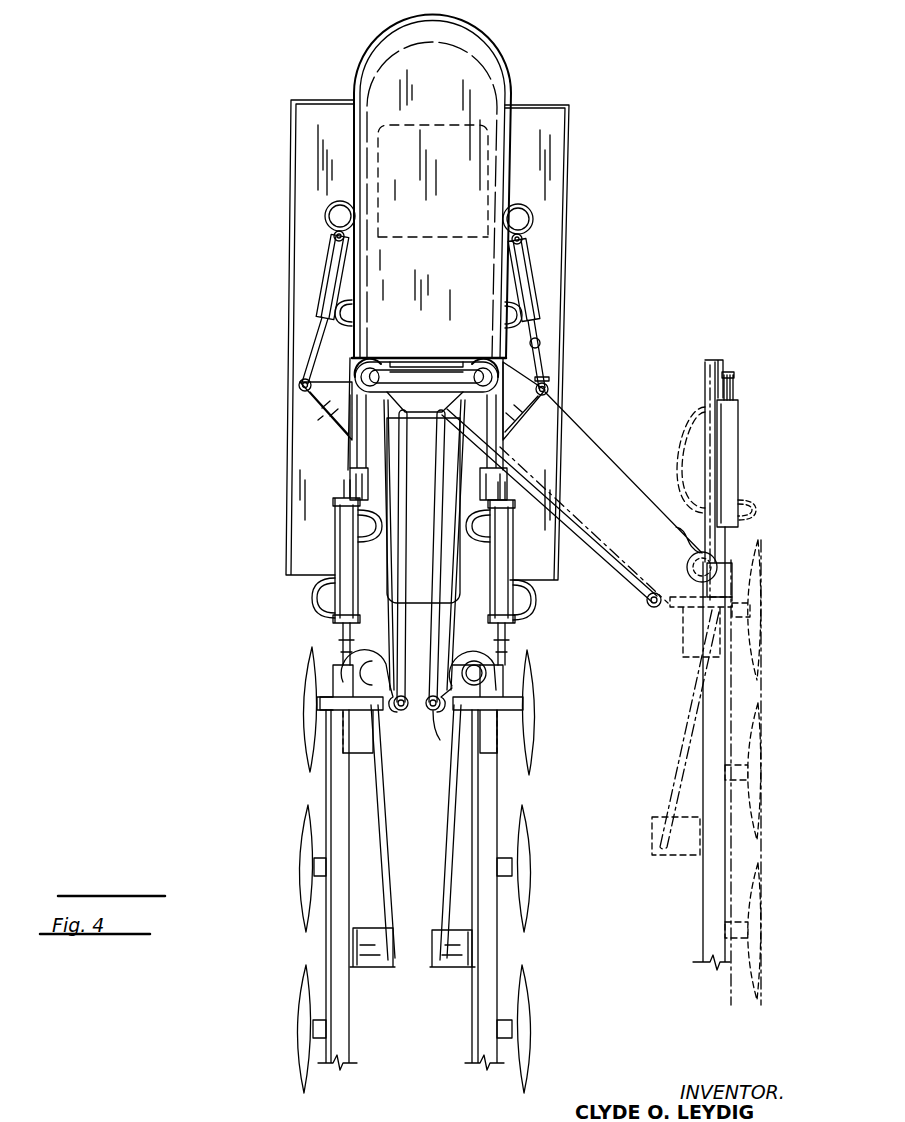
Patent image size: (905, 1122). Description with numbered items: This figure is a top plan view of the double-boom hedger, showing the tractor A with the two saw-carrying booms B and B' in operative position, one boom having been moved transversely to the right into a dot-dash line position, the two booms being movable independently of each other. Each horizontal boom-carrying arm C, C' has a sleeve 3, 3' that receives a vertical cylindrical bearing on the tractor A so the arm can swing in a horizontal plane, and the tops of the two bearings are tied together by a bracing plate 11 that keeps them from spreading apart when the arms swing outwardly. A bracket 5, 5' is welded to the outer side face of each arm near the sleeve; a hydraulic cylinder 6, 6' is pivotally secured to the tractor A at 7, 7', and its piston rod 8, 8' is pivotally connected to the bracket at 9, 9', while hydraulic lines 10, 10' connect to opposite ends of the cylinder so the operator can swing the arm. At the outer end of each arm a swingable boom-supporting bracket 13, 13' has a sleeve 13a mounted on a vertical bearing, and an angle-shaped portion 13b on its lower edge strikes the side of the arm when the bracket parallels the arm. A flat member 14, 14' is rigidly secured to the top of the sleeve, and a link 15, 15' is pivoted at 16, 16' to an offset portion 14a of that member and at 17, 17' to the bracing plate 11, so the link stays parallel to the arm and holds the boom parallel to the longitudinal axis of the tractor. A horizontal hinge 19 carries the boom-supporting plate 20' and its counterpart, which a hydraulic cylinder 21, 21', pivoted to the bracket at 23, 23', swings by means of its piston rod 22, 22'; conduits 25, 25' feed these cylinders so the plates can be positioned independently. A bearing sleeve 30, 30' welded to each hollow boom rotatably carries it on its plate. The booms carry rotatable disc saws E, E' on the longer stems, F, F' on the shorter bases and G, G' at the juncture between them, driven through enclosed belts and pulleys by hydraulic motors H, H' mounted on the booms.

The tractor A is at (572, 190).
The boom B is at (591, 821).
The boom B' is at (338, 913).
The boom-carrying arm C is at (584, 516).
The boom-carrying arm C' is at (324, 431).
The disc saw E is at (629, 978).
The disc saw E' is at (284, 1029).
The disc saw F is at (641, 657).
The disc saw F' is at (290, 709).
The disc saw G is at (629, 817).
The disc saw G' is at (284, 868).
The hydraulic motor H is at (565, 917).
The hydraulic motor H' is at (372, 975).
The sleeve 3 is at (484, 349).
The sleeve 3' is at (369, 349).
The bracket 5 is at (527, 380).
The bracket 5' is at (324, 411).
The hydraulic cylinder 6 is at (546, 280).
The hydraulic cylinder 6' is at (305, 276).
The pivot 7 is at (549, 243).
The pivot 7' is at (303, 242).
The piston rod 8 is at (557, 345).
The piston rod 8' is at (293, 344).
The pivot 9 is at (561, 359).
The pivot 9' is at (279, 371).
The hydraulic lines 10 is at (554, 441).
The hydraulic lines 10' is at (324, 246).
The bracing plate 11 is at (430, 365).
The boom-supporting bracket 13 is at (564, 481).
The boom-supporting bracket 13' is at (364, 447).
The sleeve 13a is at (470, 690).
The angle-shaped portion 13b is at (725, 358).
The flat member 14 is at (587, 576).
The flat member 14' is at (373, 585).
The offset portion 14a is at (440, 745).
The link 15 is at (533, 555).
The link 15' is at (418, 556).
The pivot 16 is at (542, 675).
The pivot 16' is at (400, 719).
The pivot 17 is at (465, 383).
The pivot 17' is at (389, 383).
The hinge 19 is at (372, 676).
The boom-supporting plate 20' is at (334, 719).
The hydraulic cylinder 21 is at (640, 511).
The hydraulic cylinder 21' is at (326, 551).
The piston rod 22 is at (533, 637).
The piston rod 22' is at (305, 636).
The pivot connection / lug 23 is at (639, 517).
The pivot connection / lug 23' is at (304, 643).
The hydraulic fluid-conveying conduits 25 is at (632, 513).
The conduit lines 25' is at (323, 563).
The bearing sleeve 30 is at (573, 785).
The bearing sleeve 30' is at (346, 832).